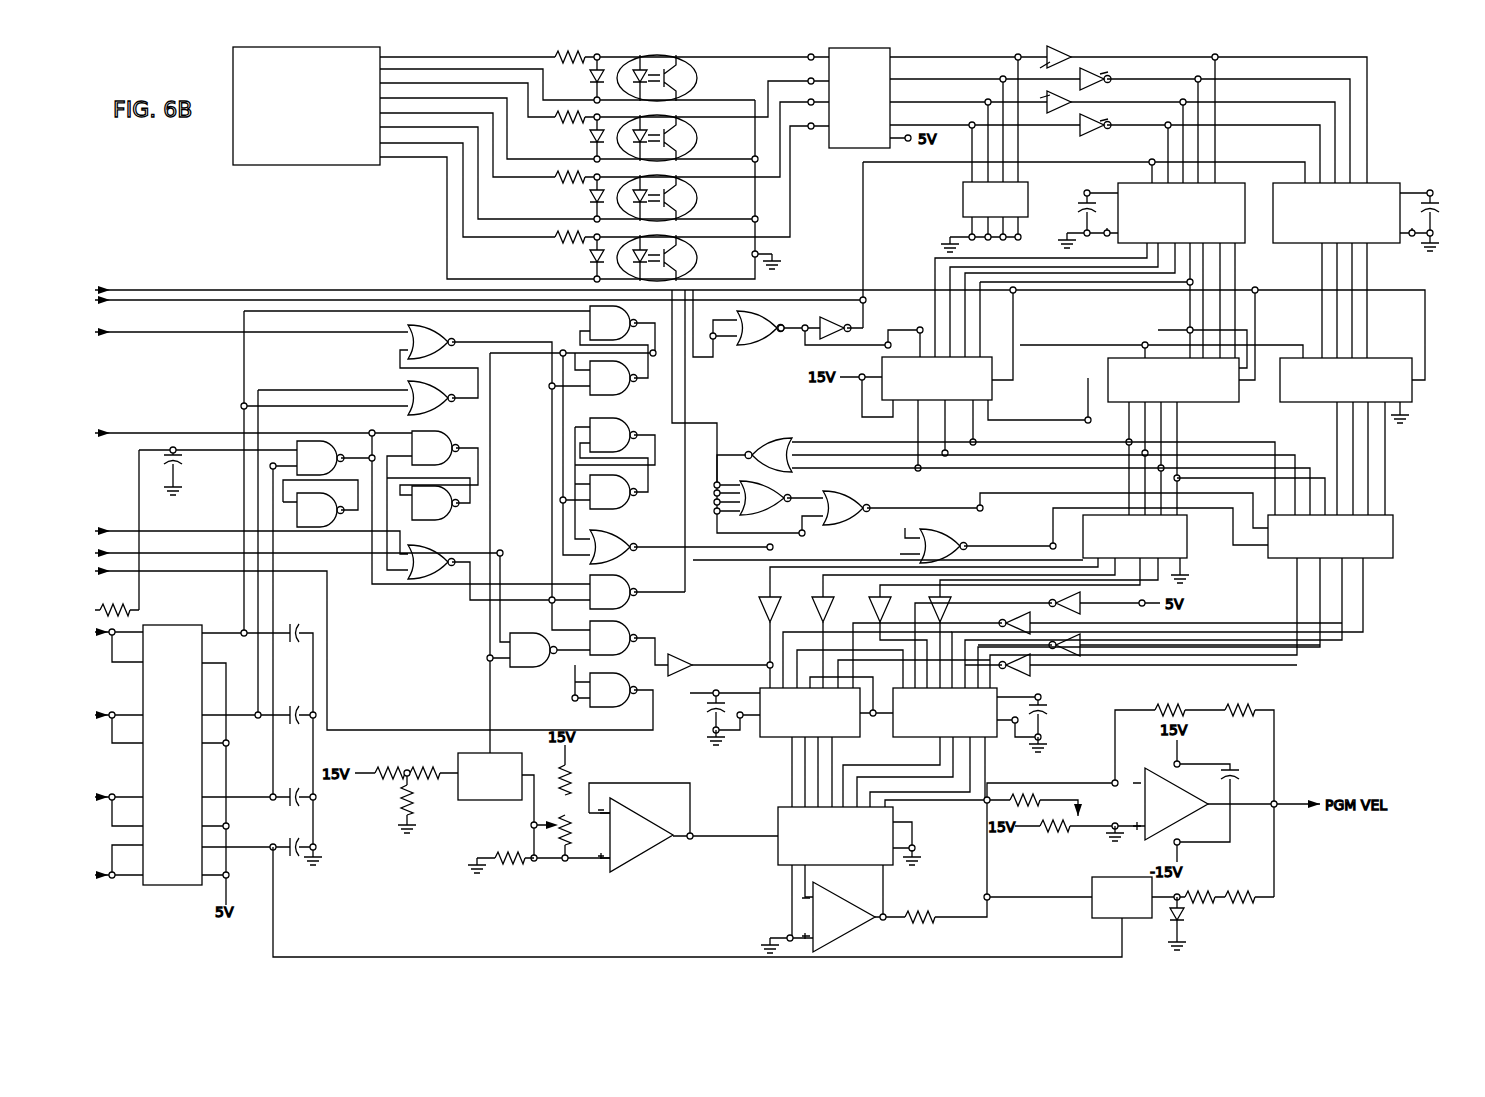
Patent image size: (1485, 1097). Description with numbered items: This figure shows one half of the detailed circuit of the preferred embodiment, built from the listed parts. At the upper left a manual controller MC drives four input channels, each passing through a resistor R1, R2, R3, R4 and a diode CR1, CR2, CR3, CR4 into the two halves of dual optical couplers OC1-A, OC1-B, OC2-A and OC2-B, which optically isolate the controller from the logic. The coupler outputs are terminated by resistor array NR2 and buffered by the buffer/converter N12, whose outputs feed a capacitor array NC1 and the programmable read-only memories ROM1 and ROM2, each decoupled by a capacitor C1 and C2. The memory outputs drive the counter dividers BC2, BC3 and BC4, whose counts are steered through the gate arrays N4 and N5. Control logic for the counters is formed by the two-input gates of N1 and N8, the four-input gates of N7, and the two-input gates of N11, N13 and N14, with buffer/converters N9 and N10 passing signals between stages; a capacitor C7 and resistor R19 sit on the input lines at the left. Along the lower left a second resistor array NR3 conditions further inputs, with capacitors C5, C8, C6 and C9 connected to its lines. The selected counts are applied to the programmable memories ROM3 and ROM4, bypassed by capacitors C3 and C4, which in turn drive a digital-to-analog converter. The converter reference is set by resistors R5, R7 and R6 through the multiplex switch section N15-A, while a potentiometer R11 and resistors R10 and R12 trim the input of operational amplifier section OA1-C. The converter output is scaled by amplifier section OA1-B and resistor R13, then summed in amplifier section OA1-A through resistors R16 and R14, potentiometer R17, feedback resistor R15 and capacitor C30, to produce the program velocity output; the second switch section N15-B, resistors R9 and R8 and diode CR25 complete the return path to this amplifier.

The manual controller MC is at (306, 106).
The resistor R1 is at (568, 60).
The resistor R2 is at (560, 120).
The resistor R3 is at (560, 180).
The resistor R4 is at (560, 240).
The diode CR1 is at (588, 82).
The diode CR2 is at (586, 140).
The diode CR3 is at (586, 200).
The diode CR4 is at (586, 260).
The optical coupler OC1-A is at (679, 78).
The optical coupler OC1-B is at (679, 138).
The optical coupler OC2-A is at (679, 198).
The optical coupler OC2-B is at (679, 258).
The resistor array NR2 is at (859, 98).
The resistor array NR3 is at (172, 755).
The buffer/converter N12 is at (1070, 146).
The capacitor array NC1 is at (995, 199).
The programmable ROM ROM1 is at (1181, 213).
The programmable ROM ROM2 is at (1336, 213).
The programmable ROM ROM3 is at (810, 712).
The programmable ROM ROM4 is at (945, 712).
The capacitor C1 is at (1078, 210).
The capacitor C2 is at (1440, 216).
The capacitor C3 is at (704, 710).
The capacitor C4 is at (1046, 714).
The capacitor C5 is at (291, 624).
The capacitor C6 is at (292, 788).
The capacitor C7 is at (185, 462).
The capacitor C8 is at (293, 705).
The capacitor C9 is at (290, 838).
The capacitor C30 is at (1248, 765).
The quad two-input NOR gate N1 is at (596, 363).
The gate array N4 is at (1135, 536).
The gate array N5 is at (1330, 536).
The dual four-input NOR gate N7 is at (725, 456).
The quad two-input NOR gate N8 is at (920, 528).
The buffer/converter N9 is at (935, 600).
The buffer/converter N10 is at (851, 330).
The quad two-input NAND gate N11 is at (573, 641).
The quad two-input NAND gate N13 is at (524, 469).
The quad two-input NAND gate N14 is at (467, 416).
The counter divider BC2 is at (937, 378).
The counter divider BC3 is at (1173, 380).
The counter divider BC4 is at (1346, 380).
The resistor R19 is at (115, 604).
The resistor R5 is at (390, 768).
The resistor R6 is at (398, 800).
The resistor R7 is at (430, 768).
The resistor R10 is at (570, 786).
The potentiometer R11 is at (560, 818).
The resistor R12 is at (508, 850).
The resistor R13 is at (906, 912).
The resistor R14 is at (1170, 702).
The resistor R15 is at (1235, 705).
The resistor R16 is at (1028, 800).
The potentiometer R17 is at (1066, 832).
The resistor R8 is at (1250, 902).
The resistor R9 is at (1200, 892).
The multiplex switch section N15-A is at (490, 776).
The multiplex switch section N15-B is at (1122, 897).
The operational amplifier OA1-A is at (1170, 804).
The operational amplifier OA1-B is at (838, 917).
The operational amplifier OA1-C is at (635, 835).
The diode CR25 is at (1184, 925).